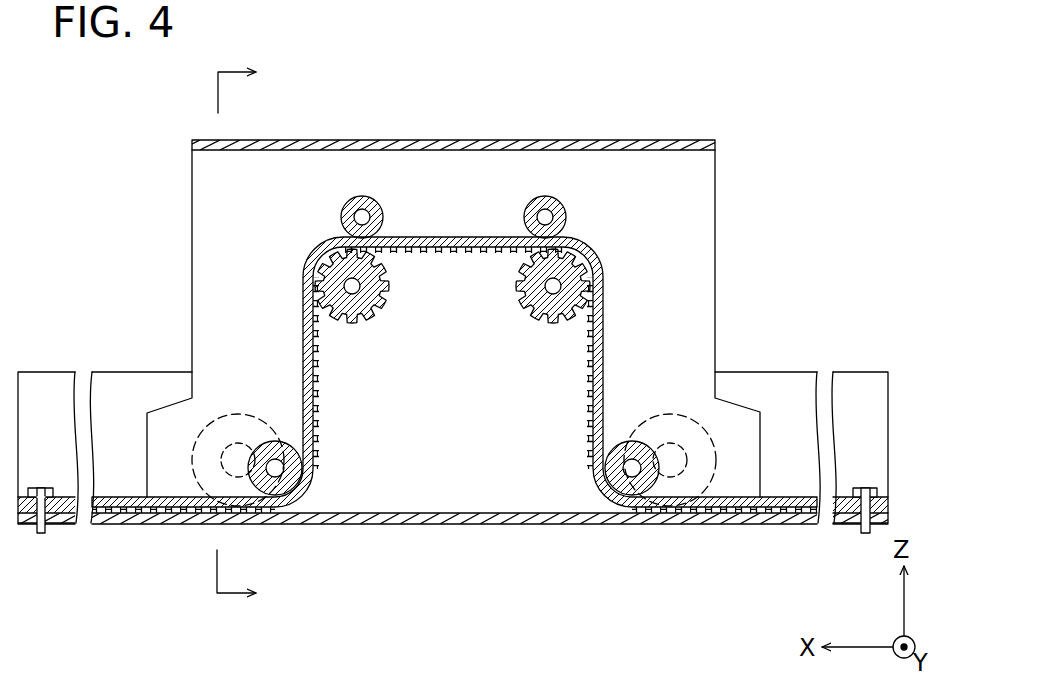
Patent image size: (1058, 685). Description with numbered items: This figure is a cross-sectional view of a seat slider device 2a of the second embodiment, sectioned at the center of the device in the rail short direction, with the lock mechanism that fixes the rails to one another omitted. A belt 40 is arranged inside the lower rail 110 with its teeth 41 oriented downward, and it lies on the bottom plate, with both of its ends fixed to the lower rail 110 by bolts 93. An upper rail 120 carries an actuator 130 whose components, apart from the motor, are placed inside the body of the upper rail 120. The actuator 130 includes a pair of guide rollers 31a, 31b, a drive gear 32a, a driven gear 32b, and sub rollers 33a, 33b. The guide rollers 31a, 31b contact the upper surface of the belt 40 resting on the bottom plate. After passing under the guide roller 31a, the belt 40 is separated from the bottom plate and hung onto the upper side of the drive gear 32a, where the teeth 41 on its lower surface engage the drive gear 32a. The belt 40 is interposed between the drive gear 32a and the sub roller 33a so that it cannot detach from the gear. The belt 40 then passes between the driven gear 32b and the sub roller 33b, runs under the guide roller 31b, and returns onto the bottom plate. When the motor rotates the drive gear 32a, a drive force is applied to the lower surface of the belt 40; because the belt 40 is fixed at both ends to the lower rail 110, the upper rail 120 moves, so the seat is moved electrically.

The seat slider device 2a is at (167, 105).
The guide roller 31a is at (303, 486).
The guide roller 31b is at (606, 493).
The drive gear 32a is at (318, 303).
The driven gear 32b is at (590, 286).
The sub roller 33a is at (362, 205).
The sub roller 33b is at (545, 205).
The belt 40 is at (606, 352).
The teeth 41 is at (585, 402).
The bolt 93 is at (41, 534).
The lower rail 110 is at (862, 378).
The upper rail 120 is at (691, 129).
The actuator 130 is at (588, 224).